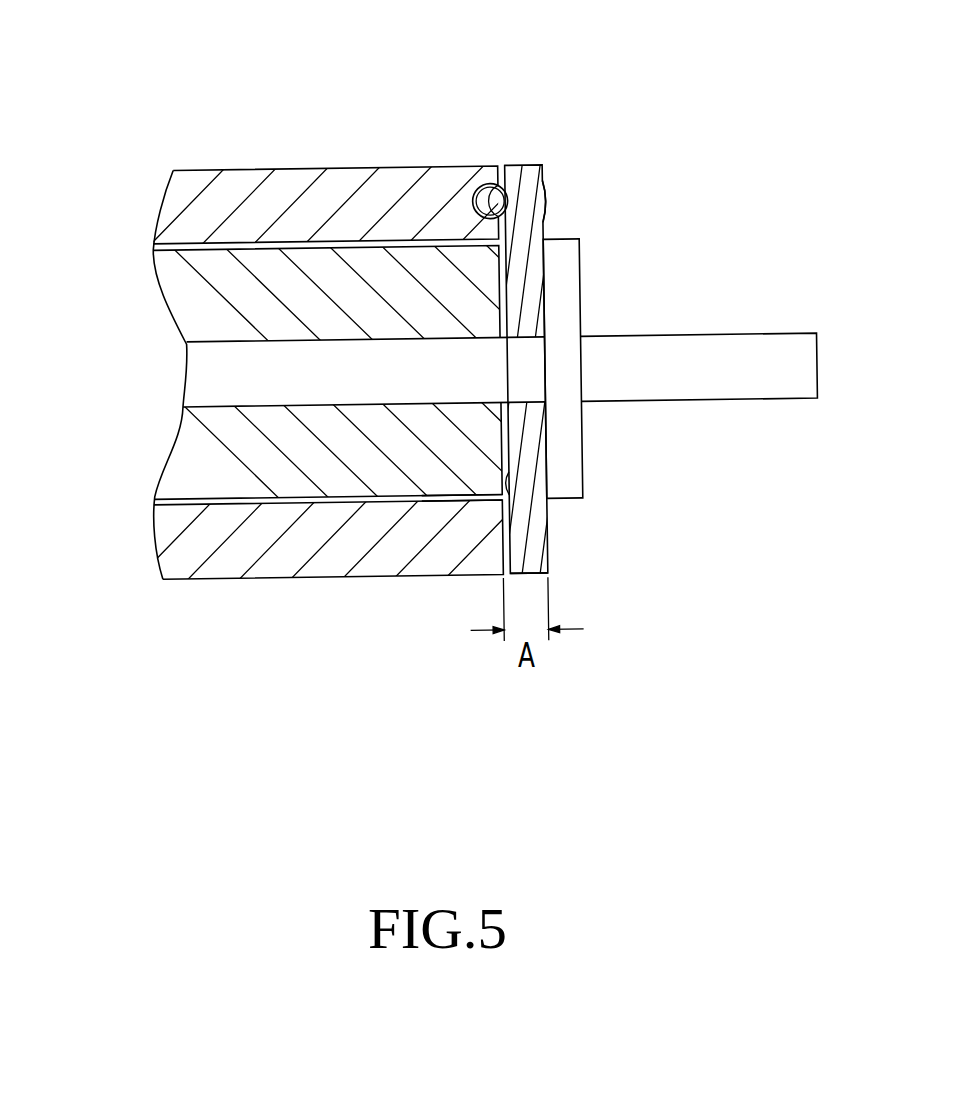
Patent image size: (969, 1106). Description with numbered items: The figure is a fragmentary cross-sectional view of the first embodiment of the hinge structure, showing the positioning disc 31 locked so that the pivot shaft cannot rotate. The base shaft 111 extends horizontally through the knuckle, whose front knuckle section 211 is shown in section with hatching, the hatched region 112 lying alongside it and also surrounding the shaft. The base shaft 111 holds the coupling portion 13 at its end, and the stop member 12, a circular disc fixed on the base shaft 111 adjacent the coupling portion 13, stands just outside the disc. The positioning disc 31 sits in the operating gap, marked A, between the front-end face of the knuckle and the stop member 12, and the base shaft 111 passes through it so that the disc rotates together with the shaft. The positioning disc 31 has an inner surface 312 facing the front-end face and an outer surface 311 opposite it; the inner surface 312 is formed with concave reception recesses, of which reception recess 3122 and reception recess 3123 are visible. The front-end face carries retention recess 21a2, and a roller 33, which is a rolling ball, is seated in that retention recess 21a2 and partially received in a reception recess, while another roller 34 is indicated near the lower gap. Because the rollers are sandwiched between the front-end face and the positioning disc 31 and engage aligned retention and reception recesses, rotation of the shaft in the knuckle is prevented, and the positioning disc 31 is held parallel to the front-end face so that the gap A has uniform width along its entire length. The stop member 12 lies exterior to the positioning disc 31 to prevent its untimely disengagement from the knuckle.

The front knuckle section 211 is at (397, 178).
The retention recess 21a2 is at (475, 185).
The roller 33 is at (490, 200).
The inner surface 312 is at (503, 163).
The reception recess 3122 is at (547, 197).
The stop member 12 is at (570, 273).
The base shaft 111 is at (203, 378).
The inner housing block 112 is at (205, 455).
The reception recess 3123 is at (515, 482).
The coupling portion 13 is at (745, 375).
The outer surface 311 is at (550, 510).
The positioning disc 31 is at (590, 338).
The roller 34 is at (500, 500).